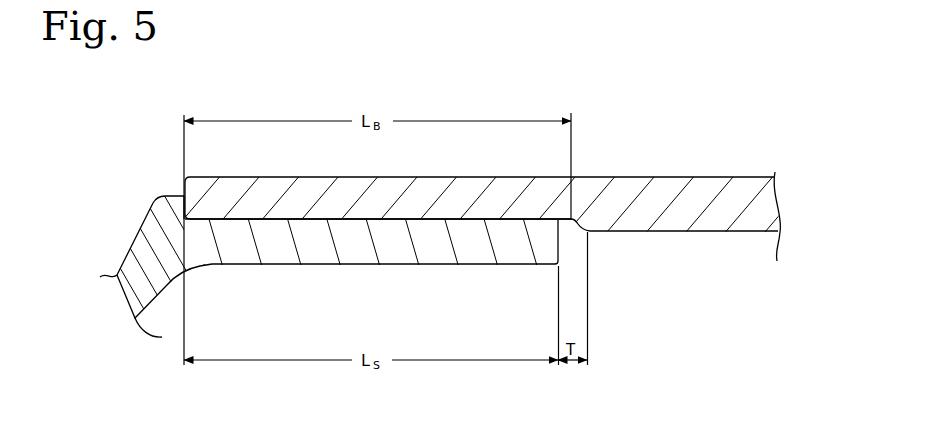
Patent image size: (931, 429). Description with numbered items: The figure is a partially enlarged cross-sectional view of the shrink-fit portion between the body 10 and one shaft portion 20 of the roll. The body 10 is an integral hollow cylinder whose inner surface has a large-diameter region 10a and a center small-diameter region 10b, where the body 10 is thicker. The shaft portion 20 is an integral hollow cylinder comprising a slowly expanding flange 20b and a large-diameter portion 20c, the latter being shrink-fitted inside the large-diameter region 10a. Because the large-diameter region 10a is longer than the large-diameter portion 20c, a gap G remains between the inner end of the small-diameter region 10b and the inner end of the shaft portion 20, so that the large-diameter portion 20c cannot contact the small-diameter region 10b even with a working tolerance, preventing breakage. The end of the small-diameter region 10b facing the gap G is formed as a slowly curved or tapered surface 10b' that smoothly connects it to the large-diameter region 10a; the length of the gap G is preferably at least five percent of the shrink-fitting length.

The body 10 is at (623, 176).
The large-diameter region 10a is at (453, 220).
The small-diameter region 10b is at (684, 262).
The slowly curved or tapered surface 10b' is at (610, 247).
The shaft portion 20 is at (127, 244).
The slowly expanding flange 20b is at (148, 194).
The large-diameter portion 20c is at (336, 266).
The gap G is at (568, 239).